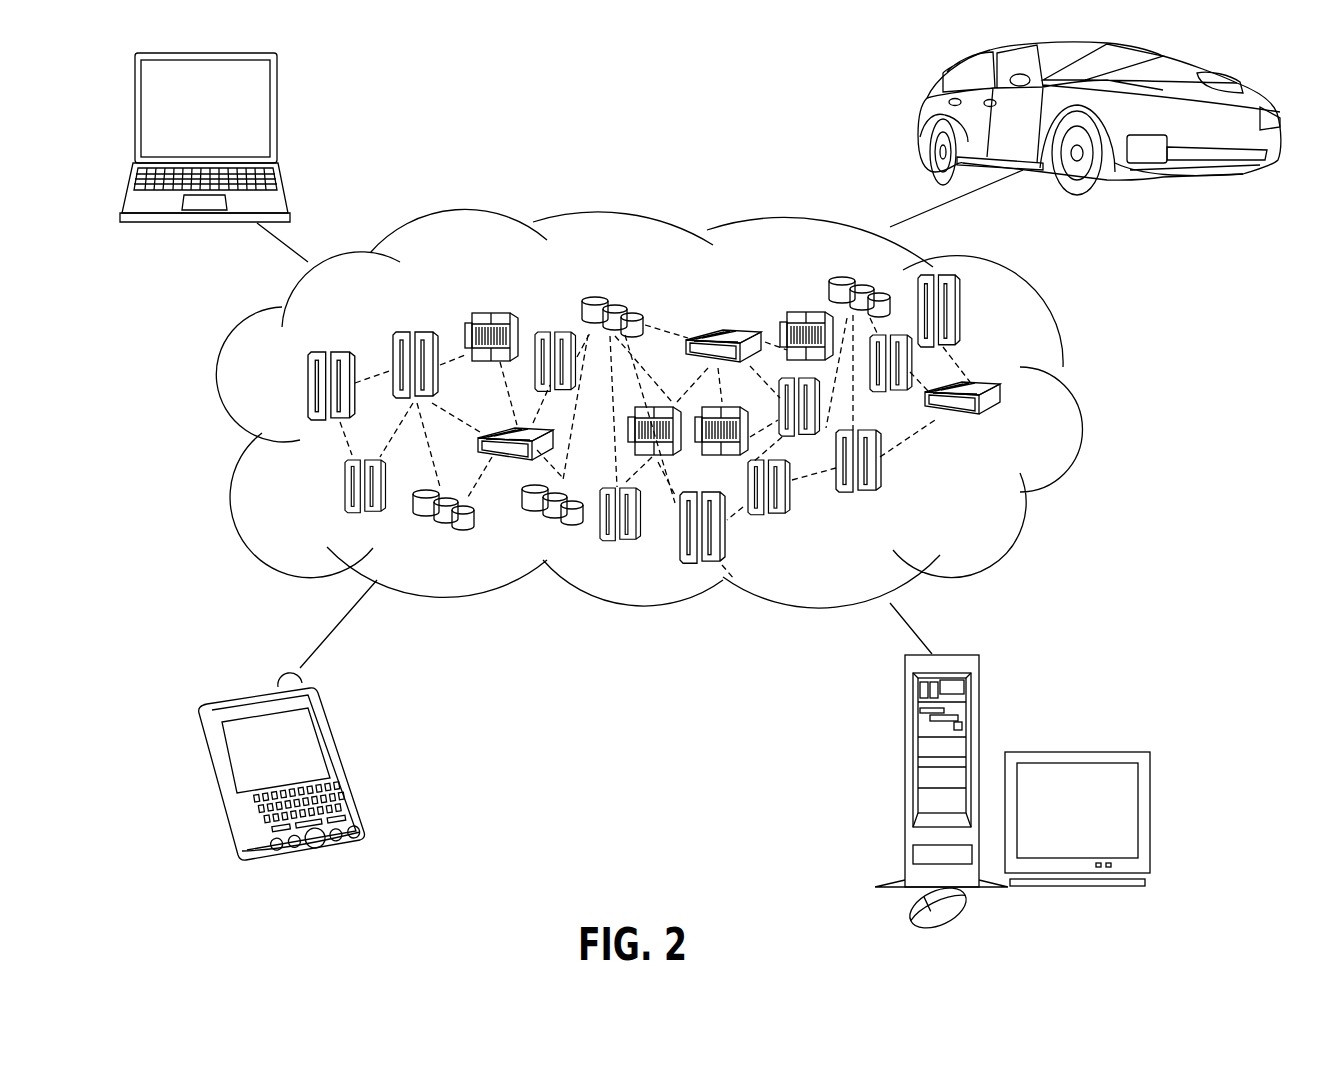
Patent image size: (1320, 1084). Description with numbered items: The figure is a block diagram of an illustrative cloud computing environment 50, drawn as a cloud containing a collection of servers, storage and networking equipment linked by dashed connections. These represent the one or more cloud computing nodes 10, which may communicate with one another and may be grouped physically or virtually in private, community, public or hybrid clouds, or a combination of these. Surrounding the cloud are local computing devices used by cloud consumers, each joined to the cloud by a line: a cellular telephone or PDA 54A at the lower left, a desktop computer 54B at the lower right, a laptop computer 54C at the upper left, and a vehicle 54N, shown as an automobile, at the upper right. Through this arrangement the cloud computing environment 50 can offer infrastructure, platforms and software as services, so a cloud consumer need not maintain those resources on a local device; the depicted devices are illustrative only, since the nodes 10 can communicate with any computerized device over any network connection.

The cloud computing environment 50 is at (1075, 400).
The cloud computing nodes 10 is at (981, 501).
The cellular telephone or PDA 54A is at (330, 731).
The desktop computer 54B is at (904, 718).
The laptop computer 54C is at (277, 92).
The vehicles 54N is at (918, 110).